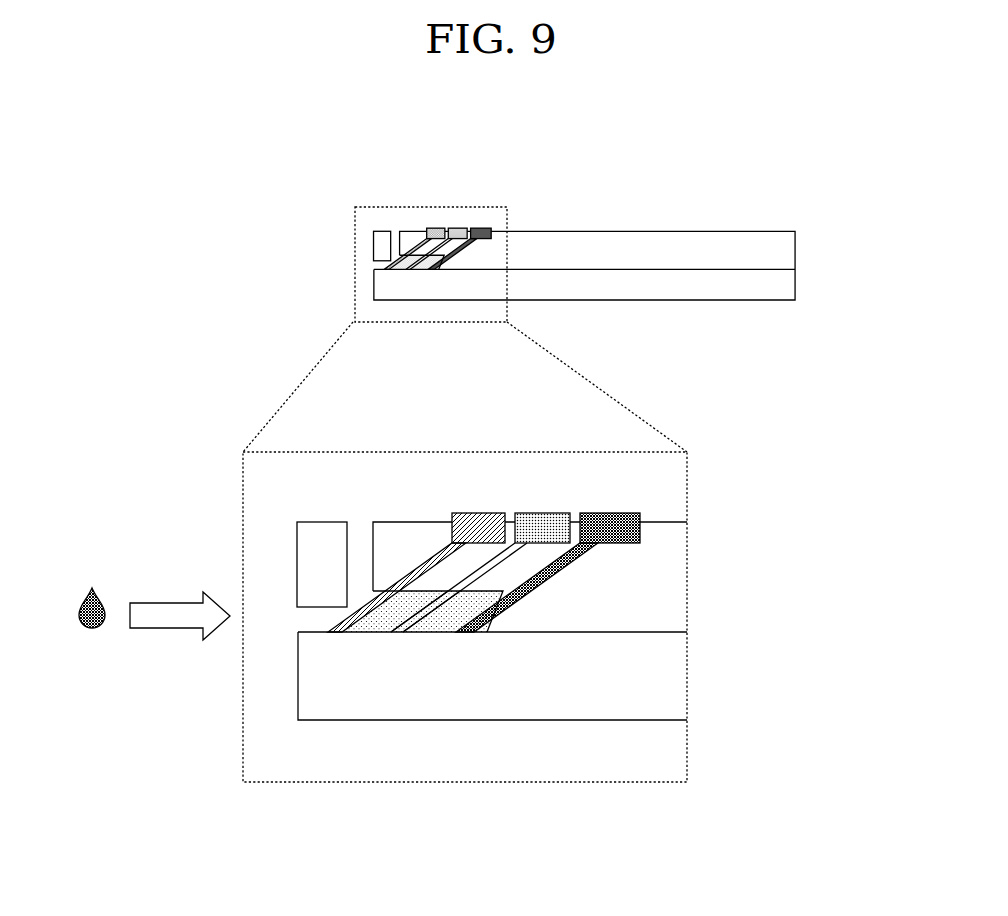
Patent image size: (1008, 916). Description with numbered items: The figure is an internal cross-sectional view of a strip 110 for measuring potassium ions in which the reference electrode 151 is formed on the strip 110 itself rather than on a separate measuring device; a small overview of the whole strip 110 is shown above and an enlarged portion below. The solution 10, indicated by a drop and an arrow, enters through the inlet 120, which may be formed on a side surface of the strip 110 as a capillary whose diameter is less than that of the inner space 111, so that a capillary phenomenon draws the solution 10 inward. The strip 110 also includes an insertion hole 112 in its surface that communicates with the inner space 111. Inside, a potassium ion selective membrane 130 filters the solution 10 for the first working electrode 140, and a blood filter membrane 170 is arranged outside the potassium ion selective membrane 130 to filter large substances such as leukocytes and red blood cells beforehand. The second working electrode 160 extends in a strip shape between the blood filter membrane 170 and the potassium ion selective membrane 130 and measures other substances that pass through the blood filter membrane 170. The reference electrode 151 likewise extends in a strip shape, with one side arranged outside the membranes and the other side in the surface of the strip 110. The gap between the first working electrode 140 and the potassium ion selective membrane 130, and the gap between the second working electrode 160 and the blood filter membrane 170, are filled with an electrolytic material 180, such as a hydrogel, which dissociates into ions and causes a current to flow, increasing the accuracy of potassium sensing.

The solution 10 is at (86, 600).
The strip 110 is at (782, 270).
The inner space 111 is at (393, 556).
The insertion hole 112 is at (360, 531).
The inlet 120 is at (306, 620).
The potassium ion selective membrane 130 is at (435, 626).
The first working electrode 140 is at (636, 534).
The reference electrode 151 is at (477, 520).
The second working electrode 160 is at (545, 513).
The blood filter membrane 170 is at (370, 625).
The electrolytic material 180 is at (400, 626).